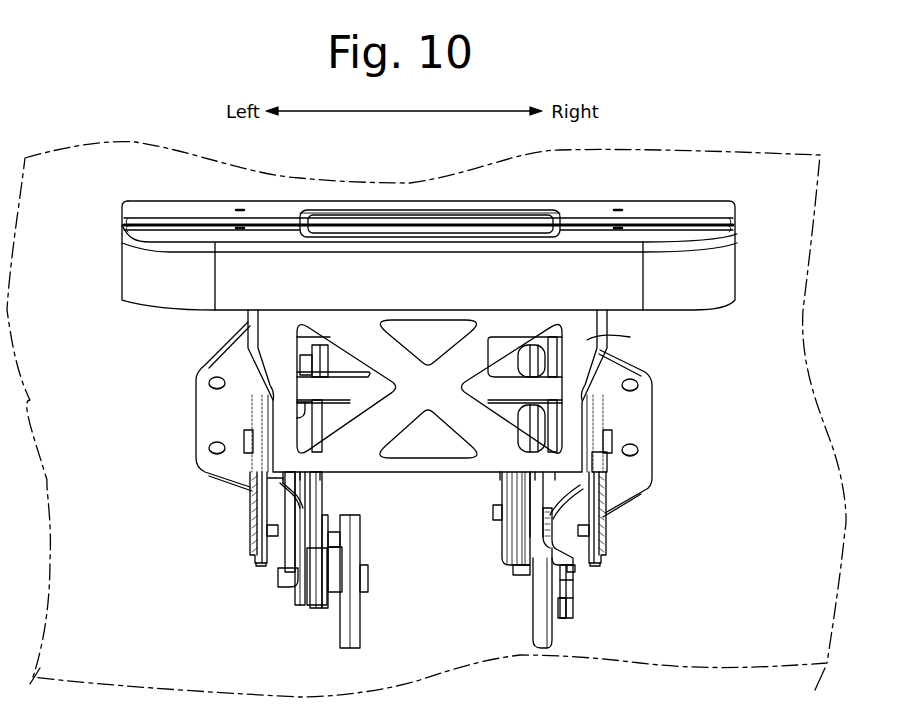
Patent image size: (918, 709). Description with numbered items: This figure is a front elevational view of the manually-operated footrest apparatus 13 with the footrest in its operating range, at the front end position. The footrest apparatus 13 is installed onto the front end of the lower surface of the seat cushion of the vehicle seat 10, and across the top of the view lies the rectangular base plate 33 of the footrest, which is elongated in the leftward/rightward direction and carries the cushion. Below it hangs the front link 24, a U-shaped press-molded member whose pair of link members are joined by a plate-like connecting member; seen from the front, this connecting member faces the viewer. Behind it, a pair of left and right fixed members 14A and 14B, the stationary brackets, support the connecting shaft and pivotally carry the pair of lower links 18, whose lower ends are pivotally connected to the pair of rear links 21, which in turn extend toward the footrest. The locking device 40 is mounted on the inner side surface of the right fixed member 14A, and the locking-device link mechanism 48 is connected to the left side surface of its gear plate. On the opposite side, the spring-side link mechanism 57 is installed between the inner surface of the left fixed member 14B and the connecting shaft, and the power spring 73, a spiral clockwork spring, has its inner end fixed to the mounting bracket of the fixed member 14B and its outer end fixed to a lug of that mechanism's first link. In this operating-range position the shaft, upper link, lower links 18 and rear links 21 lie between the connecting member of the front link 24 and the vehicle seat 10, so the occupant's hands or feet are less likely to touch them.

The vehicle seat 10 is at (690, 152).
The footrest apparatus 13 is at (72, 318).
The base plate 33 is at (128, 233).
The front link 24 is at (590, 336).
The left fixed member 14B is at (204, 398).
The right fixed member 14A is at (643, 425).
The lower link 18 is at (249, 517).
The rear link 21 is at (262, 565).
The spring-side link mechanism 57 is at (275, 600).
The power spring 73 is at (354, 622).
The locking device 40 is at (505, 549).
The locking-device link mechanism 48 is at (496, 590).